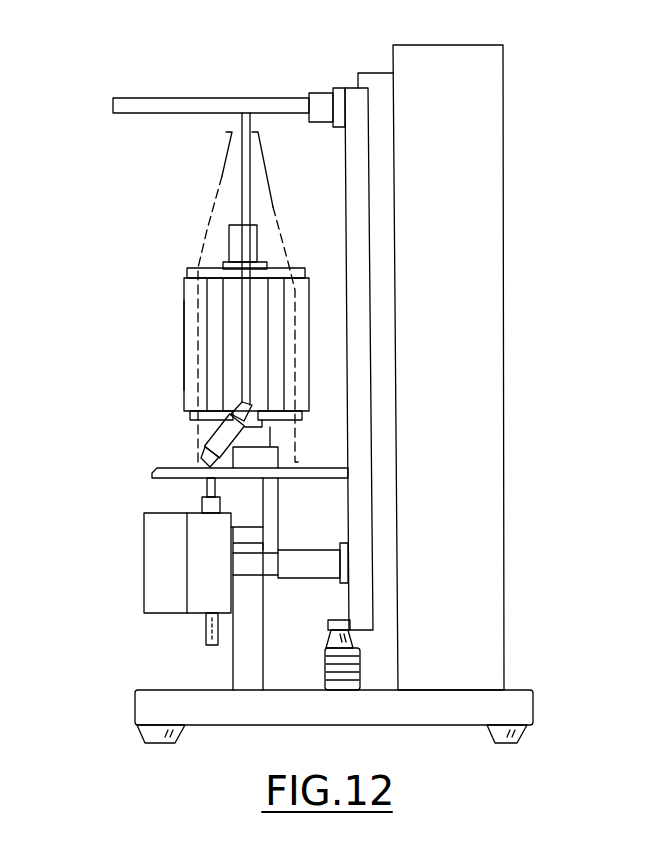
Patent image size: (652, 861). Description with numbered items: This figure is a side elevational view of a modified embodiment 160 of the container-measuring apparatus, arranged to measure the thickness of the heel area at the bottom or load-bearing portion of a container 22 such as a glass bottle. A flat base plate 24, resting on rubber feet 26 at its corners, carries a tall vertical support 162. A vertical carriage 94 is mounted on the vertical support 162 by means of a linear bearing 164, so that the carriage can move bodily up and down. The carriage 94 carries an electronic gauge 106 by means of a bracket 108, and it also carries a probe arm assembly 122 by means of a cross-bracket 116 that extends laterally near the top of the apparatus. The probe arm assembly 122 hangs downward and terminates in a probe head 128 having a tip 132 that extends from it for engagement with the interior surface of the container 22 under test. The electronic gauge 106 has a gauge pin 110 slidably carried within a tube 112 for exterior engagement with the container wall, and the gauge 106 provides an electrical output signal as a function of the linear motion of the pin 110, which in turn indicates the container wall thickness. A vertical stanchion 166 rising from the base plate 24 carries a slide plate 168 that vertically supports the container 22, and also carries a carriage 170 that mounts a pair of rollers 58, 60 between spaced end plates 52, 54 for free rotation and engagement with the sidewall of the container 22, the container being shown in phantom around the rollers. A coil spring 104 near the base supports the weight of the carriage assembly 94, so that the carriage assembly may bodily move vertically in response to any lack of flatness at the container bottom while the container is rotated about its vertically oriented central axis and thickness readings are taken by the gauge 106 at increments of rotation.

The modified embodiment 160 is at (606, 94).
The vertical support 162 is at (500, 290).
The linear bearing 164 is at (383, 137).
The vertical carriage 94 is at (378, 408).
The cross-bracket 116 is at (183, 102).
The probe arm assembly 122 is at (232, 155).
The container 22 is at (203, 246).
The carriage 170 is at (260, 265).
The roller 60 is at (303, 305).
The end plate 52 is at (193, 273).
The roller 58 is at (190, 326).
The end plate 54 is at (190, 415).
The probe head 128 is at (223, 438).
The tip 132 is at (203, 462).
The slide plate 168 is at (155, 477).
The gauge pin 110 is at (203, 488).
The tube 112 is at (210, 510).
The electronic gauge 106 is at (152, 597).
The vertical stanchion 166 is at (235, 648).
The bracket 108 is at (318, 555).
The coil spring 104 is at (355, 655).
The base plate 24 is at (515, 690).
The rubber feet 26 is at (162, 738).